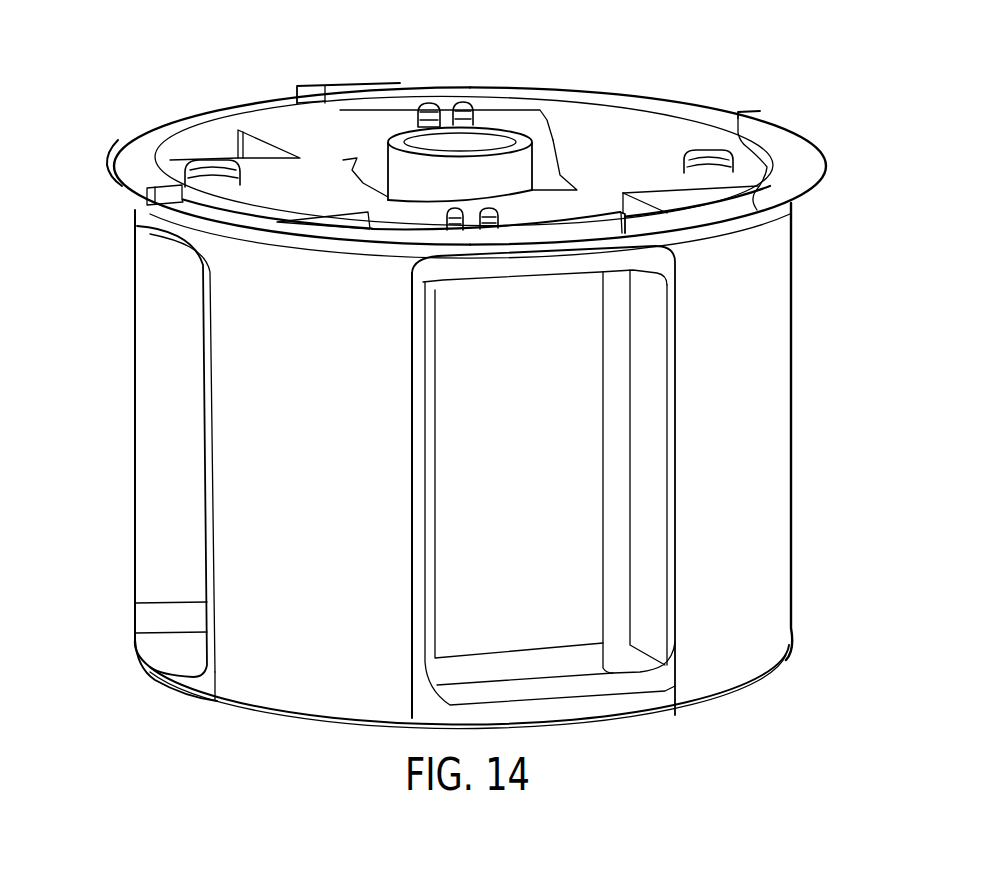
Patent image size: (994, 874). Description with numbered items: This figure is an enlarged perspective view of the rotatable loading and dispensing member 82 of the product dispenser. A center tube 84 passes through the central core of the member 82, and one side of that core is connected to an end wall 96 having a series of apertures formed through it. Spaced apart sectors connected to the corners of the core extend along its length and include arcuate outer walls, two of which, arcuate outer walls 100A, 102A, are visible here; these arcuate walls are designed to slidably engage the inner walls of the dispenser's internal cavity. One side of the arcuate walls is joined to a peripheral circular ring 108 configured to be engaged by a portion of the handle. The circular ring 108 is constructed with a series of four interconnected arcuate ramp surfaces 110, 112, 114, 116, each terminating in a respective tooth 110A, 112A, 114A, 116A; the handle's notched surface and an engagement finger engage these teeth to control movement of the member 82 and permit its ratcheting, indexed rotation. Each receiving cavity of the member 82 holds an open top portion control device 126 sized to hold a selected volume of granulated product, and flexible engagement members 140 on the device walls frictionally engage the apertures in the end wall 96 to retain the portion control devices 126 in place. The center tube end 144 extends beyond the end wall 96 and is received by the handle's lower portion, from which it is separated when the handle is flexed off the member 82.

The loading and dispensing member 82 is at (798, 552).
The center tube 84 is at (503, 171).
The end wall 96 is at (350, 130).
The arcuate outer wall 100A is at (743, 470).
The arcuate outer wall 102A is at (240, 412).
The peripheral circular ring 108 is at (806, 124).
The arcuate ramp surface 110 is at (578, 217).
The tooth 110A is at (120, 190).
The arcuate ramp surface 112 is at (202, 128).
The tooth 112A is at (307, 98).
The arcuate ramp surface 114 is at (650, 105).
The tooth 114A is at (750, 113).
The arcuate ramp surface 116 is at (783, 163).
The tooth 116A is at (675, 225).
The portion control device 126 is at (177, 240).
The flexible engagement member 140 is at (461, 103).
The center tube end 144 is at (507, 130).